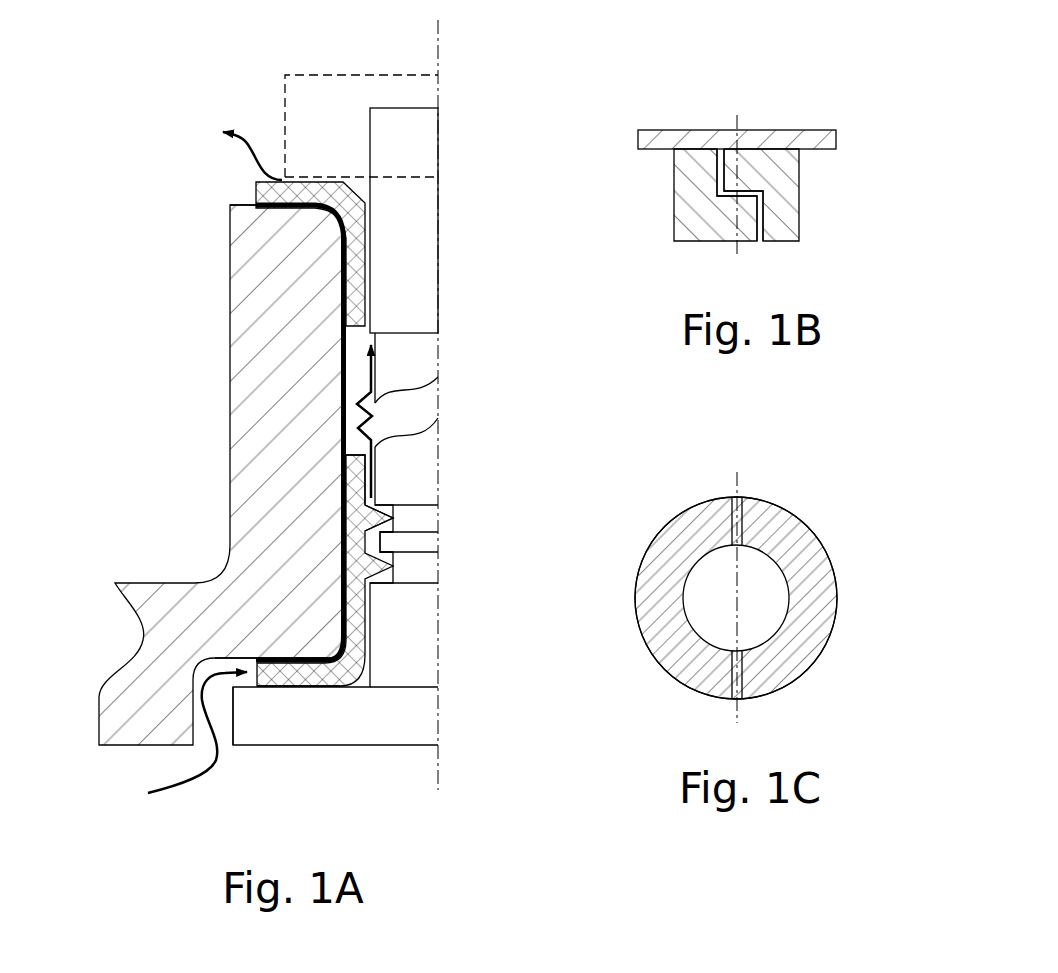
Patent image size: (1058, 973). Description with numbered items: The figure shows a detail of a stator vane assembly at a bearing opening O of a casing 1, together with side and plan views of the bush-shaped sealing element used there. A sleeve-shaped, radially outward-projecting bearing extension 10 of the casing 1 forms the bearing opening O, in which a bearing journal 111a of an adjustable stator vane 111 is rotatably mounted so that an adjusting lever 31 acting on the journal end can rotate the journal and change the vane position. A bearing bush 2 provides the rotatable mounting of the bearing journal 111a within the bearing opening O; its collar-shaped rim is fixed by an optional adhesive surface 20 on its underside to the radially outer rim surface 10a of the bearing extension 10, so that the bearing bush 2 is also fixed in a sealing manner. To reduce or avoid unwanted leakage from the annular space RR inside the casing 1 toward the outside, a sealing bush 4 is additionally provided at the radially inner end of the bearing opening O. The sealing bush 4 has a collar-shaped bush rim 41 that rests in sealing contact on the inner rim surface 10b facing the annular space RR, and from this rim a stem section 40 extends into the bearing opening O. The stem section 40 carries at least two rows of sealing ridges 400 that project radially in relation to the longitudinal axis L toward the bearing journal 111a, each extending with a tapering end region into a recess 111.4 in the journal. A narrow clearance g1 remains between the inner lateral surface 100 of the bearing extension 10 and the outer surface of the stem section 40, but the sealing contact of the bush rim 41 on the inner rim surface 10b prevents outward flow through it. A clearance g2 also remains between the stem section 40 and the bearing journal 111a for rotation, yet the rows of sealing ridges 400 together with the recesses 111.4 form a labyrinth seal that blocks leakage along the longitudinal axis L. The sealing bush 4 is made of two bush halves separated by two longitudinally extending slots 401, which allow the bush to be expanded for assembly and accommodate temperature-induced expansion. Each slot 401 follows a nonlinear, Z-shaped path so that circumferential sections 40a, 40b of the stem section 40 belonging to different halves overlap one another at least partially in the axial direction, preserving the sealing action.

In FIG. 1A, the casing 1 is at (189, 448).
In FIG. 1A, the bearing bush 2 is at (371, 228).
In FIG. 1A, the sealing bush 4 is at (353, 613).
In FIG. 1B, the sealing bush 4 is at (735, 172).
In FIG. 1C, the sealing bush 4 is at (739, 569).
In FIG. 1A, the bearing extension 10 is at (246, 318).
In FIG. 1A, the radially outer rim surface 10a is at (232, 204).
In FIG. 1A, the inner rim surface 10b is at (197, 670).
In FIG. 1A, the adhesive surface 20 is at (268, 211).
In FIG. 1A, the adjusting lever 31 is at (362, 78).
In FIG. 1A, the stem section 40 is at (343, 460).
In FIG. 1B, the stem section 40 is at (735, 187).
In FIG. 1C, the stem section 40 is at (647, 650).
In FIG. 1B, the circumferential section of the stem section 40a is at (792, 173).
In FIG. 1B, the circumferential section of the stem section 40b is at (678, 185).
In FIG. 1A, the bush rim 41 is at (303, 673).
In FIG. 1B, the bush rim 41 is at (797, 129).
In FIG. 1C, the bush rim 41 is at (832, 595).
In FIG. 1A, the inner lateral surface of the bearing extension 100 is at (350, 342).
In FIG. 1A, the stator vane 111 is at (405, 592).
In FIG. 1A, the bearing journal 111a is at (416, 303).
In FIG. 1A, the recess 111.4 is at (428, 523).
In FIG. 1A, the sealing ridge 400 is at (402, 513).
In FIG. 1B, the slot 401 is at (718, 150).
In FIG. 1C, the slot 401 is at (738, 495).
In FIG. 1A, the clearance g1 is at (340, 490).
In FIG. 1A, the clearance g2 is at (375, 632).
In FIG. 1A, the longitudinal axis L is at (440, 143).
In FIG. 1B, the longitudinal axis L is at (737, 118).
In FIG. 1A, the bearing opening O is at (375, 345).
In FIG. 1A, the annular space RR is at (232, 763).